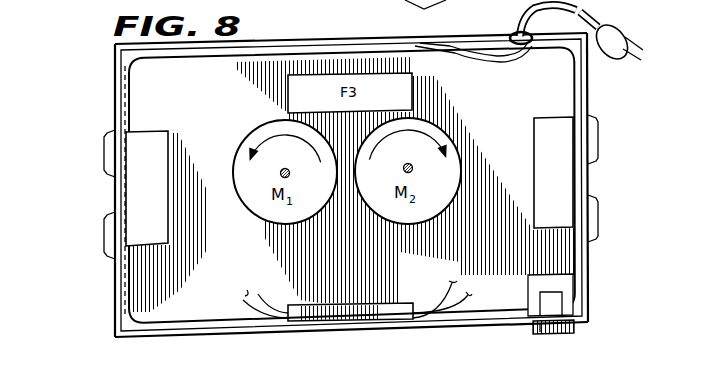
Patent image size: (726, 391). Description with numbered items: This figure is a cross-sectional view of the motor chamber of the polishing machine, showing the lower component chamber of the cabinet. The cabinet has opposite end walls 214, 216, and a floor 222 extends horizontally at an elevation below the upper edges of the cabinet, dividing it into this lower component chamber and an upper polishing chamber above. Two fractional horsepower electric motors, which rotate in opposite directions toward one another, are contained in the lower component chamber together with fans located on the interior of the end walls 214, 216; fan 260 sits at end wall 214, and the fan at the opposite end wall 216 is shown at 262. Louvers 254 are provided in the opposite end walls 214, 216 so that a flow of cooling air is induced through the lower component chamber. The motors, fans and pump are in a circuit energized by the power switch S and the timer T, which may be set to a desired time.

The end wall 214 is at (114, 98).
The end wall 216 is at (589, 80).
The floor 222 is at (212, 114).
The louvers 254 is at (105, 157).
The fan 260 is at (160, 153).
The fan housing F2 262 is at (569, 133).
The timer T is at (568, 283).
The power switch S is at (577, 327).